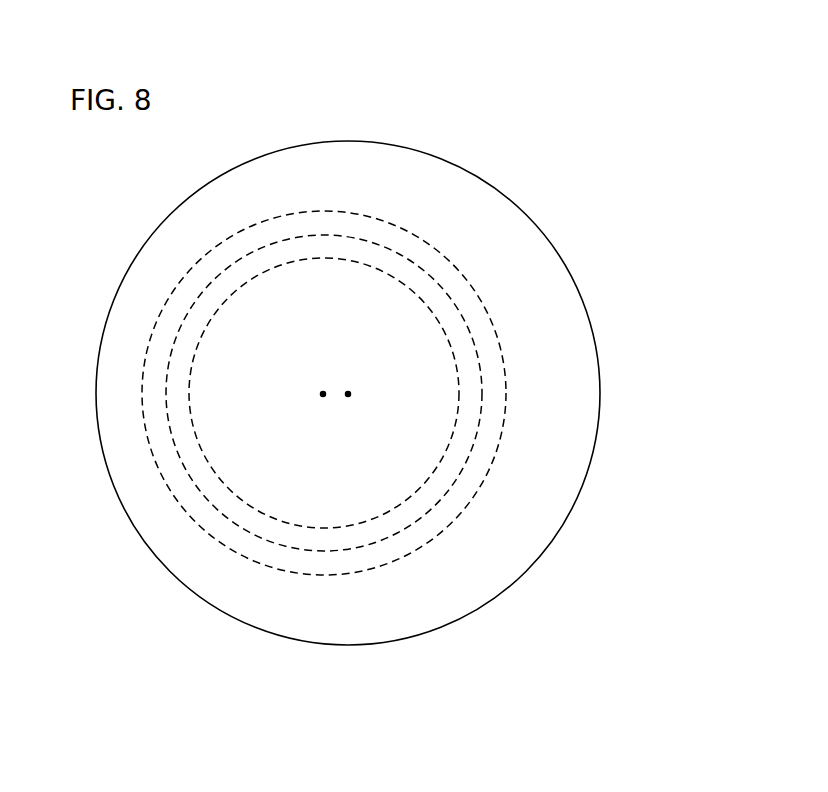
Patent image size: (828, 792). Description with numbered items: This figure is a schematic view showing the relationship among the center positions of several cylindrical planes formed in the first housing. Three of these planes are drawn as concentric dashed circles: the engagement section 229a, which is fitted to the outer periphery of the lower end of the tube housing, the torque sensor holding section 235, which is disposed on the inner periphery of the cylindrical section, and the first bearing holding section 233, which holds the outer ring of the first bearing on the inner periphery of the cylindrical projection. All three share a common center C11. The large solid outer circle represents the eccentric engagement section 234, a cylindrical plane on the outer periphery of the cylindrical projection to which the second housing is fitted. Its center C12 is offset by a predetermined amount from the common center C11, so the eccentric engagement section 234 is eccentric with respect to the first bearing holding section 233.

The eccentric engagement section 234 is at (558, 252).
The torque sensor holding section 235 is at (326, 212).
The engagement section 229a is at (237, 257).
The first bearing holding section 233 is at (224, 308).
The common center C11 is at (323, 397).
The center of the eccentric engagement section C12 is at (348, 397).